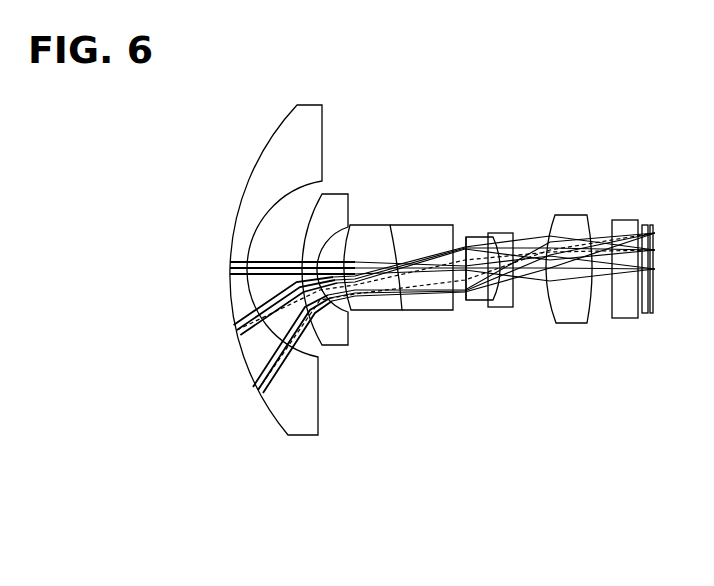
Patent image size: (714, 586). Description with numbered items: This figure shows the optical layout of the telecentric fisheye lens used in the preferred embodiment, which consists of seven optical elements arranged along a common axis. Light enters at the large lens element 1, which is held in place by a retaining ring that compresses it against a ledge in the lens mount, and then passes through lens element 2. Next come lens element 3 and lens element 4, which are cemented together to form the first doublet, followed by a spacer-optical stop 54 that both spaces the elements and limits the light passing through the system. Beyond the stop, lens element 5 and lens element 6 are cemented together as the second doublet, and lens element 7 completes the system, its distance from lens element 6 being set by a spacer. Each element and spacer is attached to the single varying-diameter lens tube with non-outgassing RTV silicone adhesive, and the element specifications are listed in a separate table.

The lens element 1 is at (258, 392).
The lens element 2 is at (338, 350).
The lens element 3 is at (378, 313).
The lens element 4 is at (436, 316).
The lens element 5 is at (480, 312).
The spacer-optical stop 54 is at (468, 230).
The lens element 6 is at (511, 316).
The lens element 7 is at (568, 324).